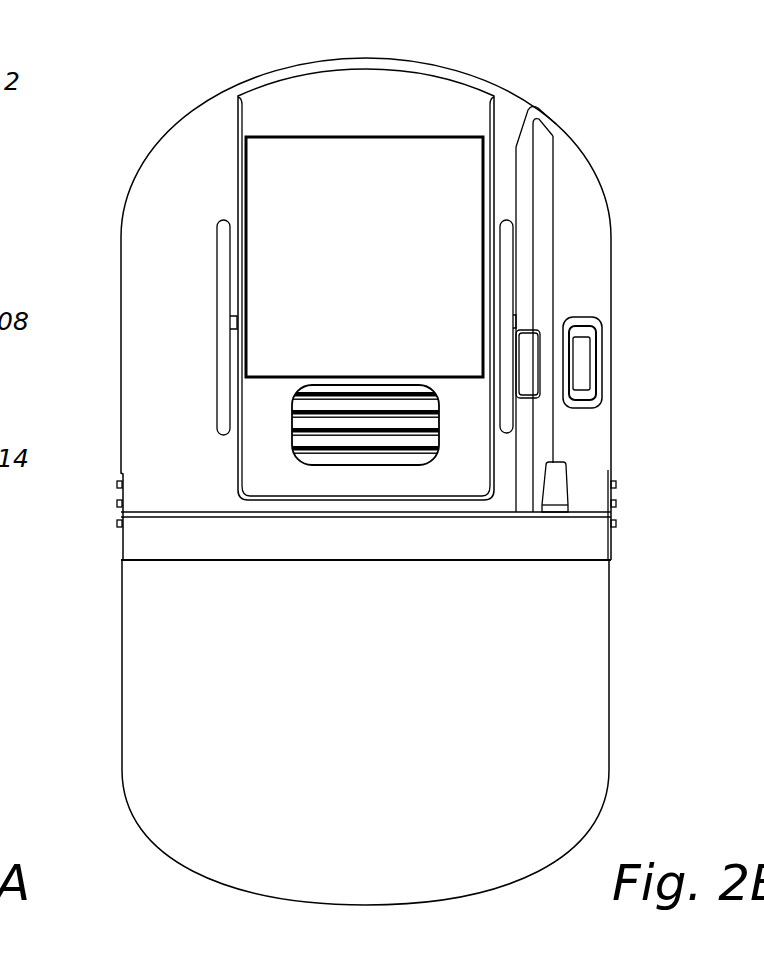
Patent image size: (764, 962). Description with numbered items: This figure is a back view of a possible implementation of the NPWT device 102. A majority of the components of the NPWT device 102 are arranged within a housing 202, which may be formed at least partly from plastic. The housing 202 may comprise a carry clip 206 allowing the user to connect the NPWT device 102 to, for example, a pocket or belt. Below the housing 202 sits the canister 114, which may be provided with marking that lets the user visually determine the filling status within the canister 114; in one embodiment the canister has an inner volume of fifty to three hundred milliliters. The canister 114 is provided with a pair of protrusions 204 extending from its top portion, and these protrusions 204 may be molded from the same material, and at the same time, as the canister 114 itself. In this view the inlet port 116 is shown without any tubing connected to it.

The NPWT device 102 is at (648, 117).
The housing 202 is at (168, 143).
The carry clip 206 is at (383, 160).
The inlet port 116 is at (554, 482).
The protrusions 204 is at (615, 504).
The canister 114 is at (152, 812).